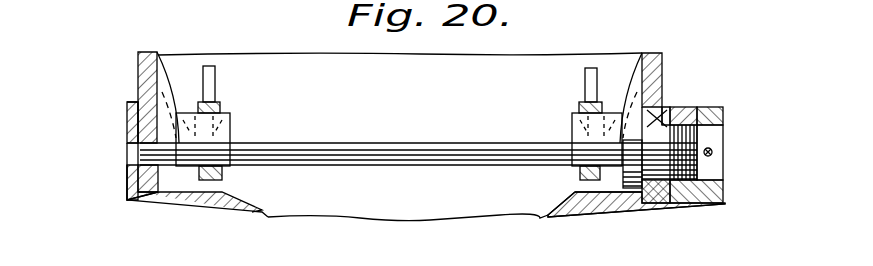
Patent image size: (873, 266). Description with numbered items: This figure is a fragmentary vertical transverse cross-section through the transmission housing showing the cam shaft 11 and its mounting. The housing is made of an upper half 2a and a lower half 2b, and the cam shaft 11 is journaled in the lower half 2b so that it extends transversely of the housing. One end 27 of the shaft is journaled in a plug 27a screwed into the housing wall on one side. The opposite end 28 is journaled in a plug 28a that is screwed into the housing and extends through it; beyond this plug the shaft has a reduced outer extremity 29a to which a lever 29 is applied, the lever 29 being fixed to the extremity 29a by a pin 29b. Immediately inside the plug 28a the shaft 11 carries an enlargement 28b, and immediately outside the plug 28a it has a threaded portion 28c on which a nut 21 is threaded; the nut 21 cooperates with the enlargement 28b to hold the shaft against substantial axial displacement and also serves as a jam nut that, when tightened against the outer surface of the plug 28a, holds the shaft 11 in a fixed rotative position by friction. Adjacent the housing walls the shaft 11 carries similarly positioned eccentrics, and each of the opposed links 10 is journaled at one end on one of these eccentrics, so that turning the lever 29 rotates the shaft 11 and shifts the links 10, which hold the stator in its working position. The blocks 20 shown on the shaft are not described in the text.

The upper half of the housing 2a is at (369, 27).
The lower half of the housing 2b is at (290, 222).
The link 10 is at (216, 72).
The cam shaft 11 is at (433, 162).
The bearing block 20 is at (231, 124).
The nut 21 is at (692, 108).
The end of the cam shaft 27 is at (141, 137).
The plug 27a is at (133, 162).
The opposite end of the cam shaft 28 is at (660, 127).
The plug 28a is at (667, 203).
The enlargement 28b is at (633, 182).
The threaded portion 28c is at (692, 205).
The lever 29 is at (712, 108).
The reduced outer extremity 29a is at (704, 135).
The pin 29b is at (713, 153).